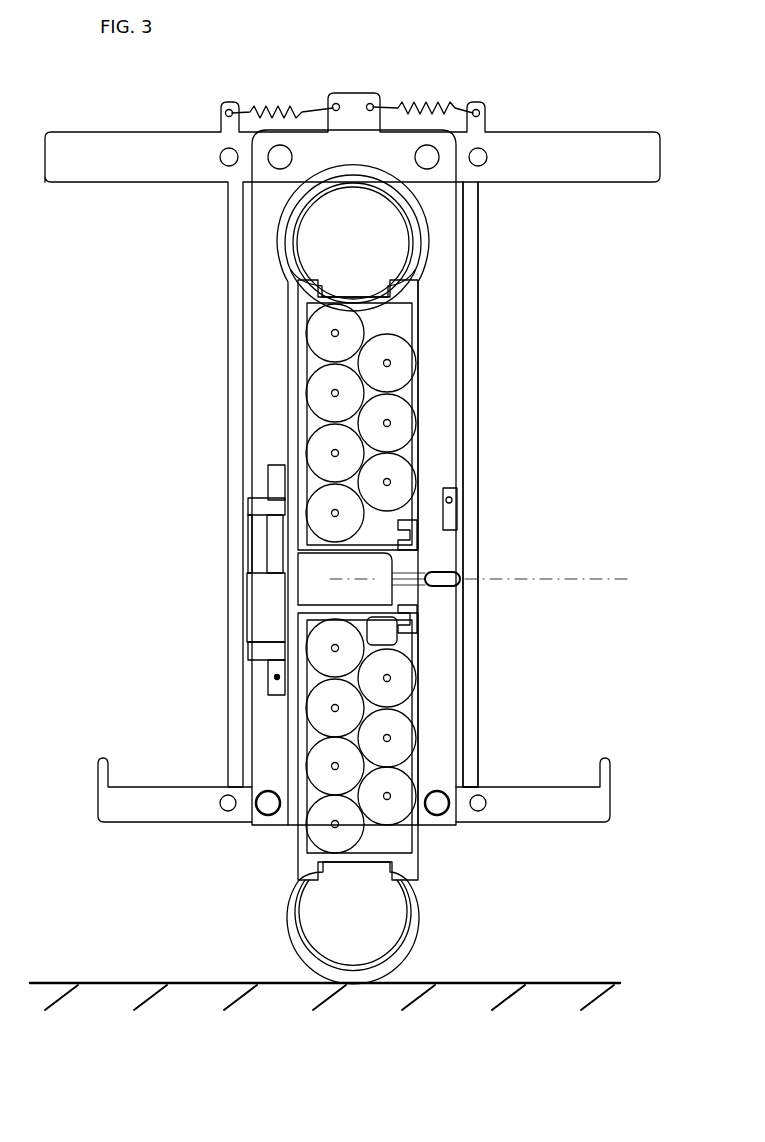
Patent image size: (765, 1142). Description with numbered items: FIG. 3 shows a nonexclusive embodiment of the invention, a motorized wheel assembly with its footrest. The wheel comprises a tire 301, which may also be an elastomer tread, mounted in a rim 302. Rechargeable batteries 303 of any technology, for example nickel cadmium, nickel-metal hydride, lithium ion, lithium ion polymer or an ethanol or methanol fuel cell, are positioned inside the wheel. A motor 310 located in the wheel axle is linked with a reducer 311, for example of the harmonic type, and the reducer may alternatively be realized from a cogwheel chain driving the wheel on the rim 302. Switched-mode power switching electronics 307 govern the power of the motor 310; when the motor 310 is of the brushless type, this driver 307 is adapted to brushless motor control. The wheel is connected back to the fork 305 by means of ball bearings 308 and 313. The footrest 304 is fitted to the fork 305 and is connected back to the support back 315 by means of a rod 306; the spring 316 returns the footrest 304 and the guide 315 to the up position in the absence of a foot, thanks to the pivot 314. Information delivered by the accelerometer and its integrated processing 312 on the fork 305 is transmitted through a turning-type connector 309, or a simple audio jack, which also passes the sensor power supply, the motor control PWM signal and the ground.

The tire 301 is at (420, 897).
The rim 302 is at (413, 860).
The rechargeable batteries 303 is at (388, 823).
The footrest 304 is at (600, 811).
The fork 305 is at (443, 705).
The rod 306 is at (472, 674).
The switched-mode power switching electronics 307 is at (380, 634).
The ball bearing 308 is at (408, 620).
The turning-type connector 309 is at (454, 579).
The motor 310 is at (380, 575).
The reducer 311 is at (408, 538).
The accelerometer and its integrated processing 312 is at (450, 513).
The ball bearing 313 is at (277, 482).
The pivot 314 is at (427, 157).
The support back 315 is at (645, 168).
The spring 316 is at (457, 112).